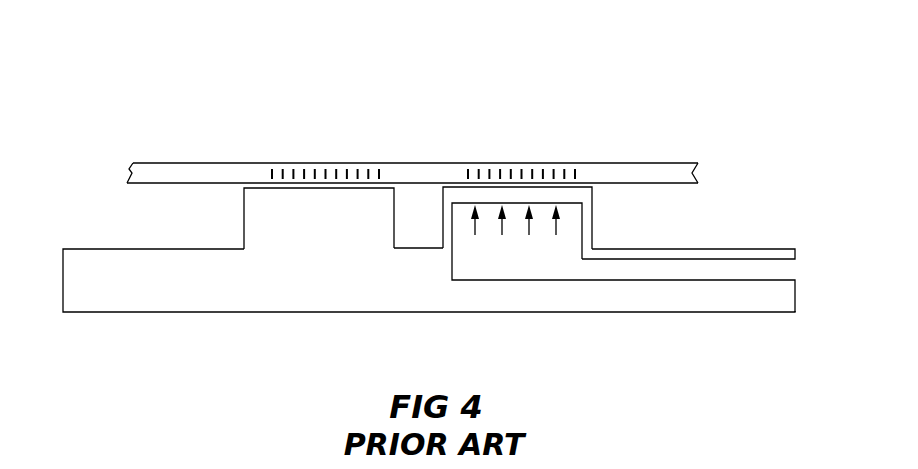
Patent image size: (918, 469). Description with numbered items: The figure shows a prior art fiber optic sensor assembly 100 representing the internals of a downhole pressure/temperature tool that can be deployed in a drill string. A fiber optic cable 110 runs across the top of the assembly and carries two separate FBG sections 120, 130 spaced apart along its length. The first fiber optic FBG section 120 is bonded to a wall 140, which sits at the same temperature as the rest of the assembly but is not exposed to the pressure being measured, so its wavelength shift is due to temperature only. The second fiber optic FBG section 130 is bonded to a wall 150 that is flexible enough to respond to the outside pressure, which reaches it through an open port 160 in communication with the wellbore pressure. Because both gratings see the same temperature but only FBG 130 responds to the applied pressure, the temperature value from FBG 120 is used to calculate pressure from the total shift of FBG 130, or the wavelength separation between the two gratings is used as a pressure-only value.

The prior art sensor assembly configuration 100 is at (164, 76).
The fiber optic cable 110 is at (180, 163).
The first fiber optic FBG section 120 is at (306, 163).
The second fiber optic FBG section 130 is at (502, 162).
The wall 140 is at (297, 193).
The wall 150 is at (570, 193).
The open port 160 is at (788, 273).